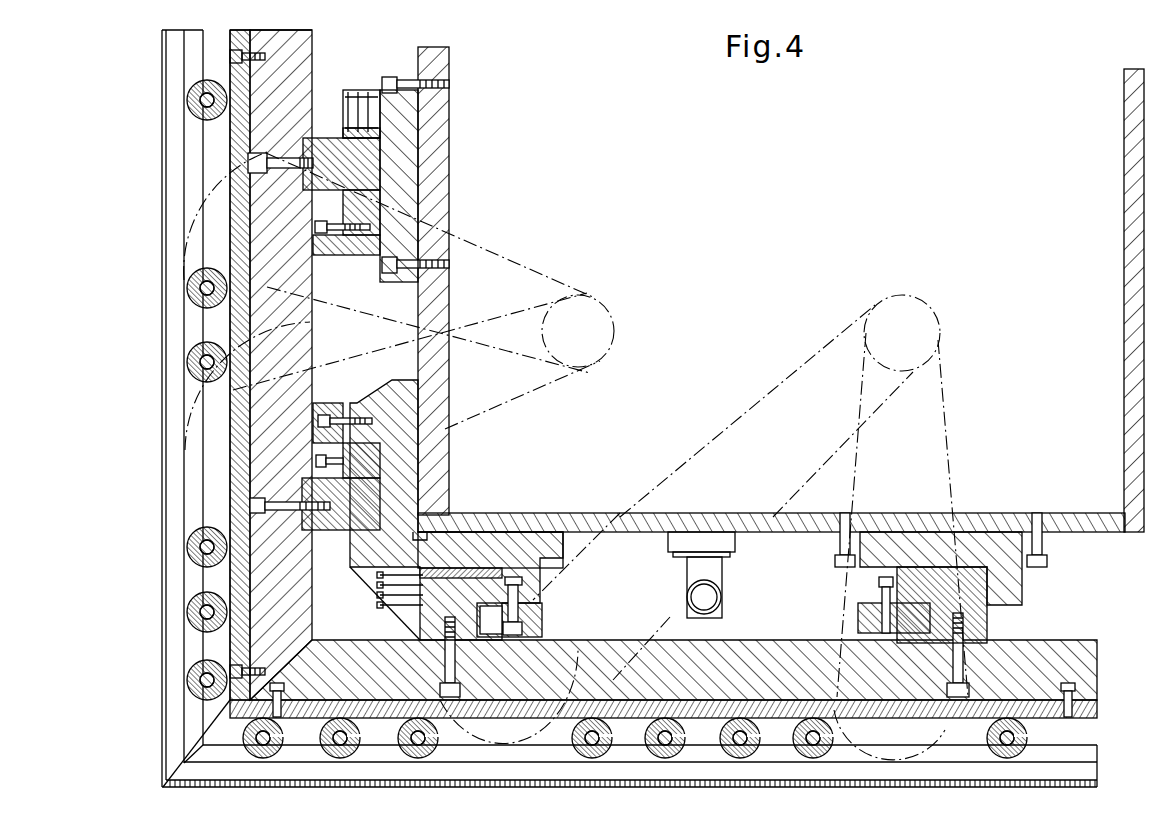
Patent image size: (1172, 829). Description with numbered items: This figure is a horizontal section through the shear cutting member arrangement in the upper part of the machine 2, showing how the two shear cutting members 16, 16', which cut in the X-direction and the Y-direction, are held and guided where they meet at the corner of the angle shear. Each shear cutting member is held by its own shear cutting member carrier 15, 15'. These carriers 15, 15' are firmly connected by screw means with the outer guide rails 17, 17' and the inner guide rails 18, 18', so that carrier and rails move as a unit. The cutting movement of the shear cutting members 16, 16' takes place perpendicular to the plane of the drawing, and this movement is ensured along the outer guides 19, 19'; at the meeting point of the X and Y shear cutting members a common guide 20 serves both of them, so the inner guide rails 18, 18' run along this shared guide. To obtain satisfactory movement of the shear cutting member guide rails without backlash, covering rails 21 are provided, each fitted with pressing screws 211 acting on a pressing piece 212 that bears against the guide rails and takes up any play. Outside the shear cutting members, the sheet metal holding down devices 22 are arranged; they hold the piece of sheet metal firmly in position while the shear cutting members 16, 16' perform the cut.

The upper part of the machine 2 is at (440, 183).
The shear cutting member carrier 15 is at (694, 656).
The shear cutting member carrier 15' is at (208, 365).
The shear cutting member 16 is at (683, 700).
The shear cutting member 16' is at (184, 365).
The outer guide rail 17 is at (943, 587).
The outer guide rail 17' is at (292, 162).
The inner guide rail 18 is at (488, 525).
The inner guide rail 18' is at (294, 531).
The outer guide 19 is at (781, 343).
The outer guide 19' is at (438, 281).
The common guide 20 is at (408, 498).
The covering rail 21 is at (325, 250).
The pressing screw 211 is at (313, 463).
The pressing piece 212 is at (345, 462).
The sheet metal holding down device 22 is at (200, 670).